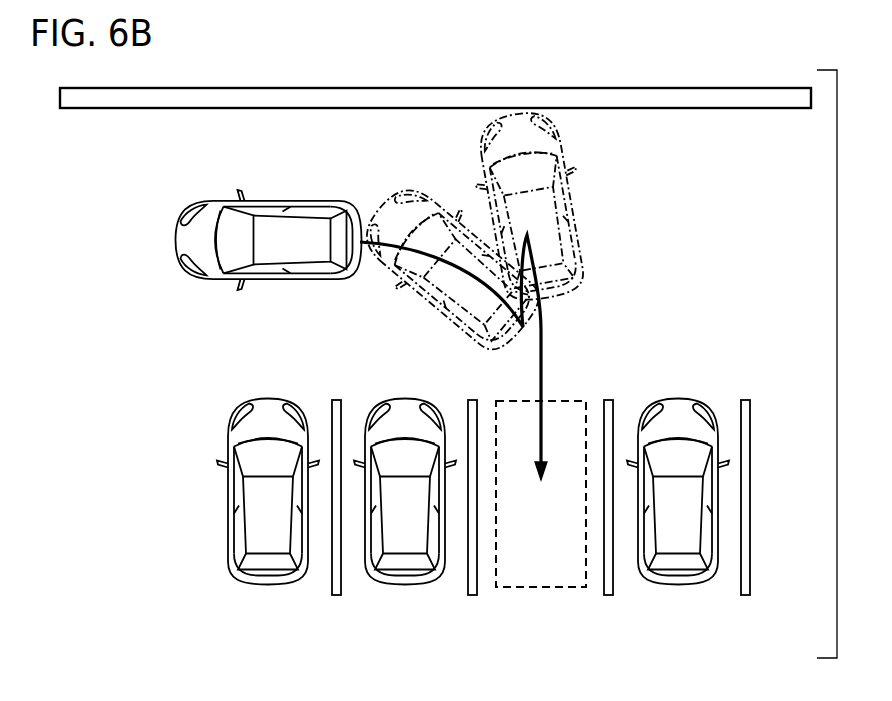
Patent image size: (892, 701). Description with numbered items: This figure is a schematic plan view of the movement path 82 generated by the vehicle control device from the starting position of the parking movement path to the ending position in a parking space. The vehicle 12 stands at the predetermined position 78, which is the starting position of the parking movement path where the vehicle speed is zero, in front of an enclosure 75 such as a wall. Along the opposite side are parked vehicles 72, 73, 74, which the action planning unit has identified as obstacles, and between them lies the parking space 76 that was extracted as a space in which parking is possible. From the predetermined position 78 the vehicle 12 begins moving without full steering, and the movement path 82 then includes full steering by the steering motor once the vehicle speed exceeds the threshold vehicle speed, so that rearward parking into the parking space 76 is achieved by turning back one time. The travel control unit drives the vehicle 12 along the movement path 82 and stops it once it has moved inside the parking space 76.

The vehicle 12 is at (394, 236).
The vehicle 72 is at (677, 586).
The vehicle 73 is at (404, 586).
The vehicle 74 is at (269, 586).
The enclosure 75 is at (627, 87).
The parking space 76 is at (544, 559).
The predetermined position 78 is at (219, 279).
The movement path 82 is at (544, 370).